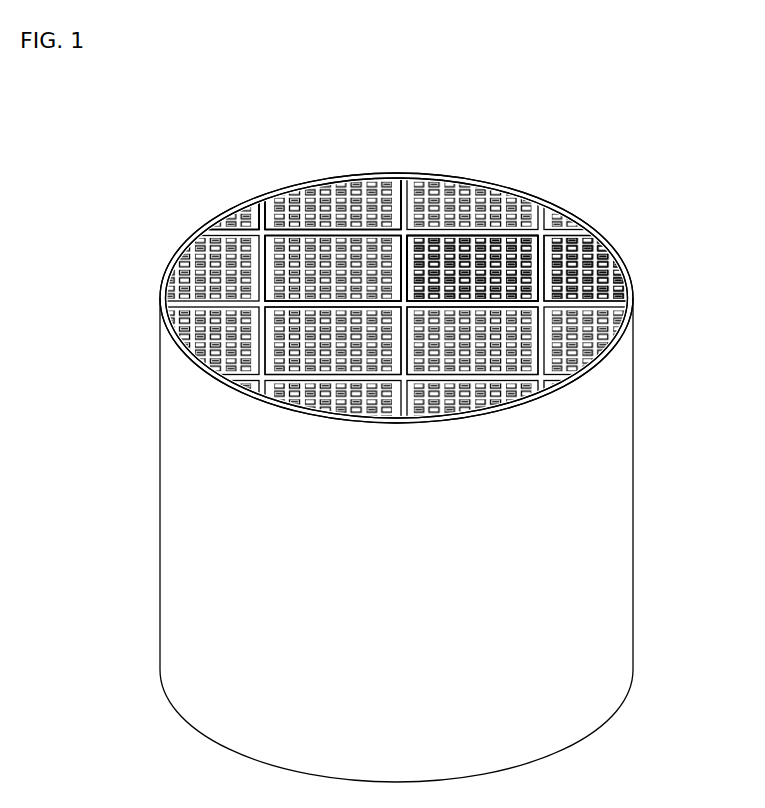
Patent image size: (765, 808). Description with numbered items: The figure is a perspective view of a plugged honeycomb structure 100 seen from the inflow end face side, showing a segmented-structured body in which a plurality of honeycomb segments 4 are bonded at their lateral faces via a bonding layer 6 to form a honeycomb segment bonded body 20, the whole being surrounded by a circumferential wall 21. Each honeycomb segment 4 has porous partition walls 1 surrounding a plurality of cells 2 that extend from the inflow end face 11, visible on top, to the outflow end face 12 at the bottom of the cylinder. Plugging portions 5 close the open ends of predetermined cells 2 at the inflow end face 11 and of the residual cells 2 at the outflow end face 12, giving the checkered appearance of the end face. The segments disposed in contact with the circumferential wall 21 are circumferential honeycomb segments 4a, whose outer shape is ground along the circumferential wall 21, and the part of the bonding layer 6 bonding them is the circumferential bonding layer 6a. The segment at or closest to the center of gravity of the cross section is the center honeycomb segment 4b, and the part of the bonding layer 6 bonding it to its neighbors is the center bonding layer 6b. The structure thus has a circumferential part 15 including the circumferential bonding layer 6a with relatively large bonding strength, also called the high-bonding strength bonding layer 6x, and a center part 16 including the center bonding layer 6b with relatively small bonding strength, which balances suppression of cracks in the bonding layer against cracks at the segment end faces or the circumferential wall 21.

The plugged honeycomb structure 100 is at (673, 84).
The partition wall 1 is at (509, 246).
The cell 2 is at (524, 247).
The honeycomb segment 4 is at (308, 206).
The circumferential honeycomb segment 4a is at (240, 213).
The center honeycomb segment 4b is at (336, 236).
The plugging portion 5 is at (541, 233).
The bonding layer 6 is at (262, 215).
The circumferential bonding layer 6a is at (401, 290).
The center bonding layer 6b is at (468, 255).
The high-bonding strength bonding layer 6x is at (264, 196).
The inflow end face 11 is at (197, 213).
The outflow end face 12 is at (190, 732).
The circumferential part 15 is at (231, 371).
The center part 16 is at (399, 297).
The honeycomb segment bonded body 20 is at (561, 232).
The circumferential wall 21 is at (607, 396).